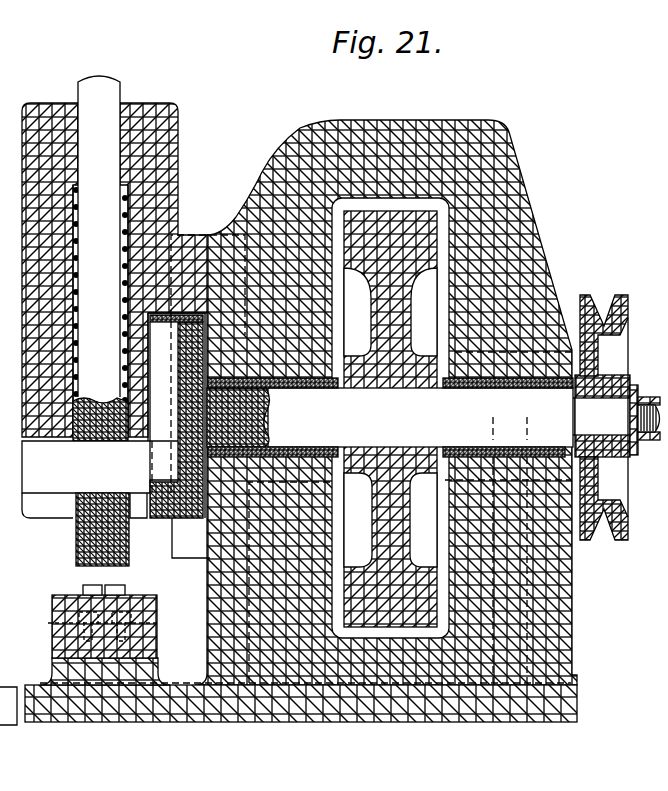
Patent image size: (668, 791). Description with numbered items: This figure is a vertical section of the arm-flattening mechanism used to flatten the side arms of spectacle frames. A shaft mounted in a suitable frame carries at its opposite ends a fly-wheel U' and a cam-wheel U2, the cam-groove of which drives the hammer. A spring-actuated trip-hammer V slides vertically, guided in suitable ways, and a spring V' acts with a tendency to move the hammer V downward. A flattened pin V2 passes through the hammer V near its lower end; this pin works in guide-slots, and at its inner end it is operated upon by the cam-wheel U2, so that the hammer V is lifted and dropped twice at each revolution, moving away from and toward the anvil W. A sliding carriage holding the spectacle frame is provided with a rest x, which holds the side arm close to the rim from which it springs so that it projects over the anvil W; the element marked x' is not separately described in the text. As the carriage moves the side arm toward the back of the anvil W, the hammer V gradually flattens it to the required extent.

The spring V' is at (100, 311).
The trip-hammer V is at (366, 266).
The flattened pin V2 is at (101, 479).
The cam-wheel U2 is at (179, 435).
The fly-wheel U' is at (390, 418).
The anvil W is at (94, 626).
The contact piece x' is at (83, 584).
The rest x is at (121, 582).